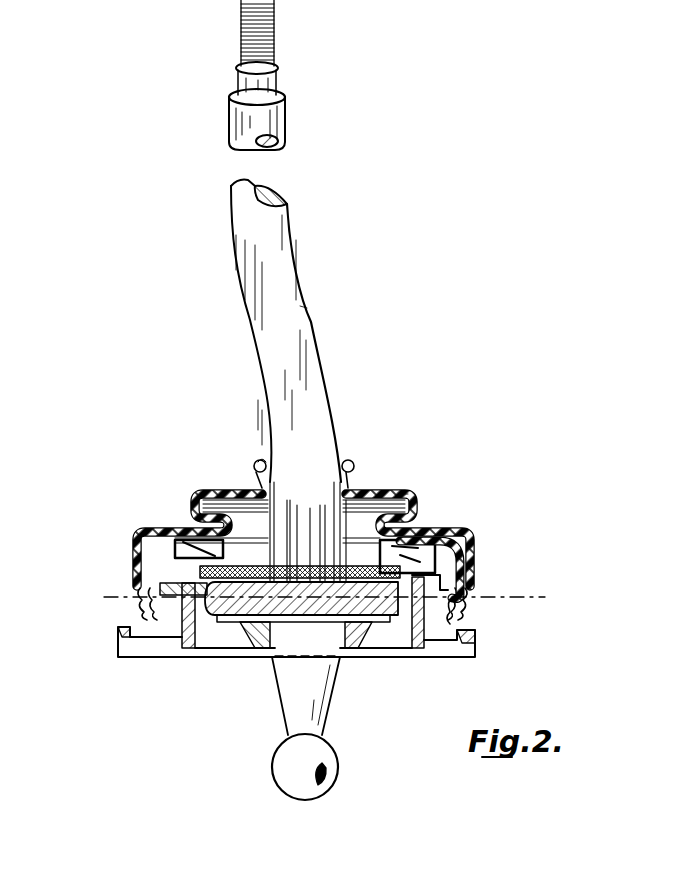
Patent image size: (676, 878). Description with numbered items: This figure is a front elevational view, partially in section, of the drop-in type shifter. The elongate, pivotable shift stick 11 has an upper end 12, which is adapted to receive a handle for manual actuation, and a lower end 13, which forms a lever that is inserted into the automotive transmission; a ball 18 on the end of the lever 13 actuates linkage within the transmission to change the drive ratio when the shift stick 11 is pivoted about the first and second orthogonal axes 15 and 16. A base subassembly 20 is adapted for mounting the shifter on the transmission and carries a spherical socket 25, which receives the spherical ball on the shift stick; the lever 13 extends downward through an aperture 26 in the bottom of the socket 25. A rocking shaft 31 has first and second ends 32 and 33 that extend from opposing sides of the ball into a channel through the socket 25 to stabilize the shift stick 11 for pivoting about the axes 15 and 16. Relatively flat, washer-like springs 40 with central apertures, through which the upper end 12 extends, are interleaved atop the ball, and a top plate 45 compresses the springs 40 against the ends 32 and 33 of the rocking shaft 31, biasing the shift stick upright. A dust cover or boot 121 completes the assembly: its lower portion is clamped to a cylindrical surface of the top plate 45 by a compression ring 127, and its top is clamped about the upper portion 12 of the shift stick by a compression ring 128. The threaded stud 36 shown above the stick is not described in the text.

The threaded shaft / knob stud 36 is at (280, 75).
The shift stick 11 is at (306, 310).
The upper end 12 is at (283, 321).
The lower end 13 is at (300, 693).
The washer-like springs 40 is at (232, 530).
The compression ring 128 is at (352, 466).
The dust cover 121 is at (383, 492).
The second orthogonal axis 16 is at (372, 564).
The top plate 45 is at (432, 530).
The first end of rocking shaft 32 is at (432, 576).
The second end of rocking shaft 33 is at (205, 567).
The rocking shaft 31 is at (271, 657).
The spherical socket 25 is at (360, 632).
The aperture 26 is at (319, 672).
The base subassembly 20 is at (110, 658).
The first orthogonal axis 15 is at (527, 594).
The compression ring 127 is at (455, 597).
The ball 18 is at (338, 766).